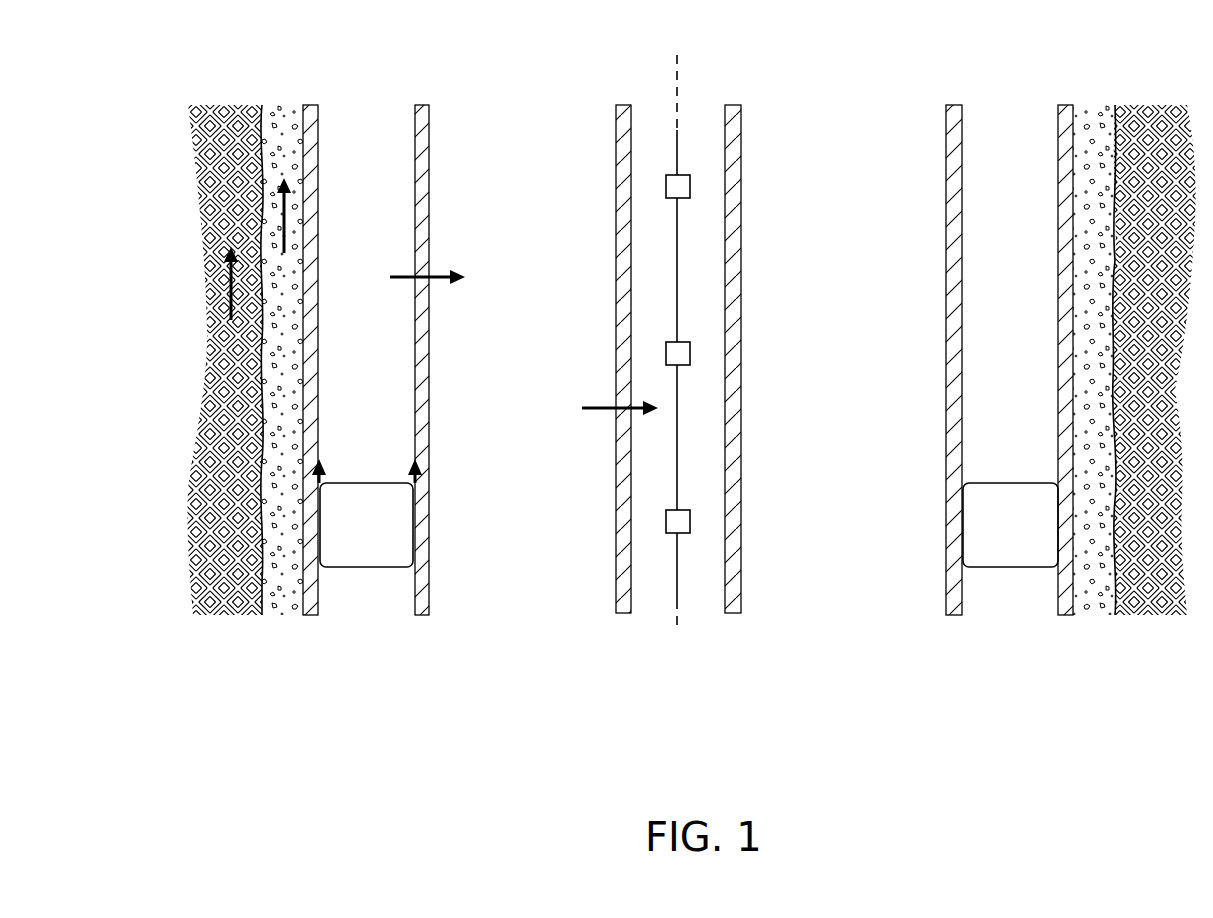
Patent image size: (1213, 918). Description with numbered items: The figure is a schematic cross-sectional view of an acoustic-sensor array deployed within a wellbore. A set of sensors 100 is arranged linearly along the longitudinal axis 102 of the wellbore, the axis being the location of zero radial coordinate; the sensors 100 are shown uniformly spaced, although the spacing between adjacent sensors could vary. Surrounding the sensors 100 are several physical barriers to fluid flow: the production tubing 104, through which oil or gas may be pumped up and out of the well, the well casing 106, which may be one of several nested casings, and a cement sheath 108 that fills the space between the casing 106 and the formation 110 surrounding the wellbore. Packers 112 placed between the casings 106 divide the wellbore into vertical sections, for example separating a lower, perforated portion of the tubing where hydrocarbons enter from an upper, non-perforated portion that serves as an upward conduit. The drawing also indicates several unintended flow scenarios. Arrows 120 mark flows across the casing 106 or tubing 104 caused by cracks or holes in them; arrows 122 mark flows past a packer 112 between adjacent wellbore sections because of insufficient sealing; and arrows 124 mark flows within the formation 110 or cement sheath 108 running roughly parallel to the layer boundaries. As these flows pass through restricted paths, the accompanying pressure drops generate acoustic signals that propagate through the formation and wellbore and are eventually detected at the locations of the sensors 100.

The sensors 100 is at (690, 185).
The longitudinal axis 102 is at (680, 75).
The production tubing 104 is at (625, 616).
The well casing 106 is at (311, 618).
The cement sheath 108 is at (282, 598).
The formation 110 is at (236, 163).
The packer 112 is at (360, 570).
The arrows 120 is at (410, 274).
The arrows 122 is at (320, 520).
The arrows 124 is at (283, 208).